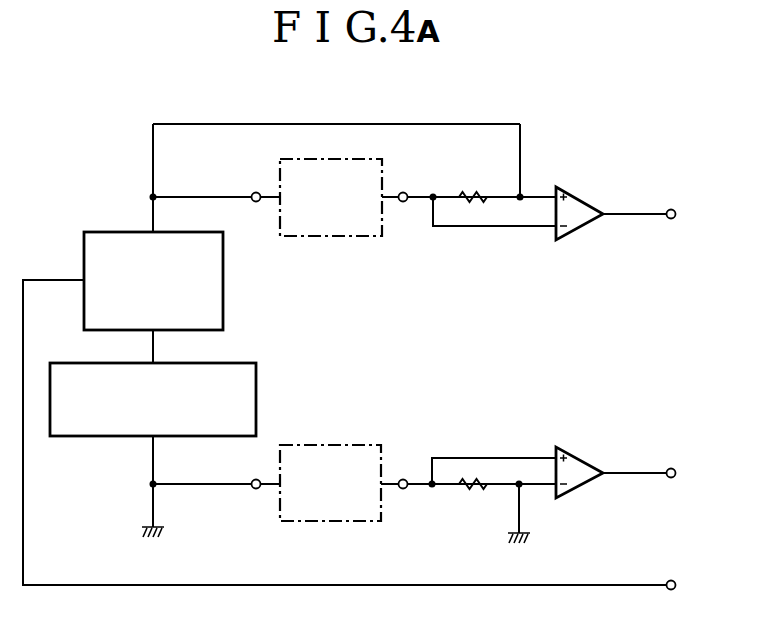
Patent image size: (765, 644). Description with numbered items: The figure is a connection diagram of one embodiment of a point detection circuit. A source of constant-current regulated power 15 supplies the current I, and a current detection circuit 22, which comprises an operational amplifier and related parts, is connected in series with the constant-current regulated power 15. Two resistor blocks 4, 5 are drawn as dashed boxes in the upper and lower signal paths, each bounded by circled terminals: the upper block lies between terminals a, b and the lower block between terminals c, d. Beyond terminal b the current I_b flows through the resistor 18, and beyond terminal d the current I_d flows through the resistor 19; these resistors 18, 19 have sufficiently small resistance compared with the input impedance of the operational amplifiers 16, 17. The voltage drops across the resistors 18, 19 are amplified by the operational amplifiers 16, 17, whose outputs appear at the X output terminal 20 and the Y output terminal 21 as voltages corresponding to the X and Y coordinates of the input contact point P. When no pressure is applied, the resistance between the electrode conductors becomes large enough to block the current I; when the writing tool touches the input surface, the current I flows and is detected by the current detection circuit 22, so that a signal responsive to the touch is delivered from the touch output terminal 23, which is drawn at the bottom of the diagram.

The resistor 4 is at (365, 237).
The resistor 5 is at (336, 445).
The source of constant-current regulated power 15 is at (256, 376).
The operational amplifier 16 is at (582, 199).
The operational amplifier 17 is at (582, 460).
The resistor 18 is at (479, 195).
The resistor 19 is at (477, 481).
The X output terminal 20 is at (671, 209).
The Y output terminal 21 is at (671, 468).
The current detection circuit 22 is at (223, 283).
The touch output terminal 23 is at (671, 580).
The terminal a is at (256, 192).
The terminal b is at (403, 192).
The terminal c is at (256, 489).
The terminal d is at (403, 489).